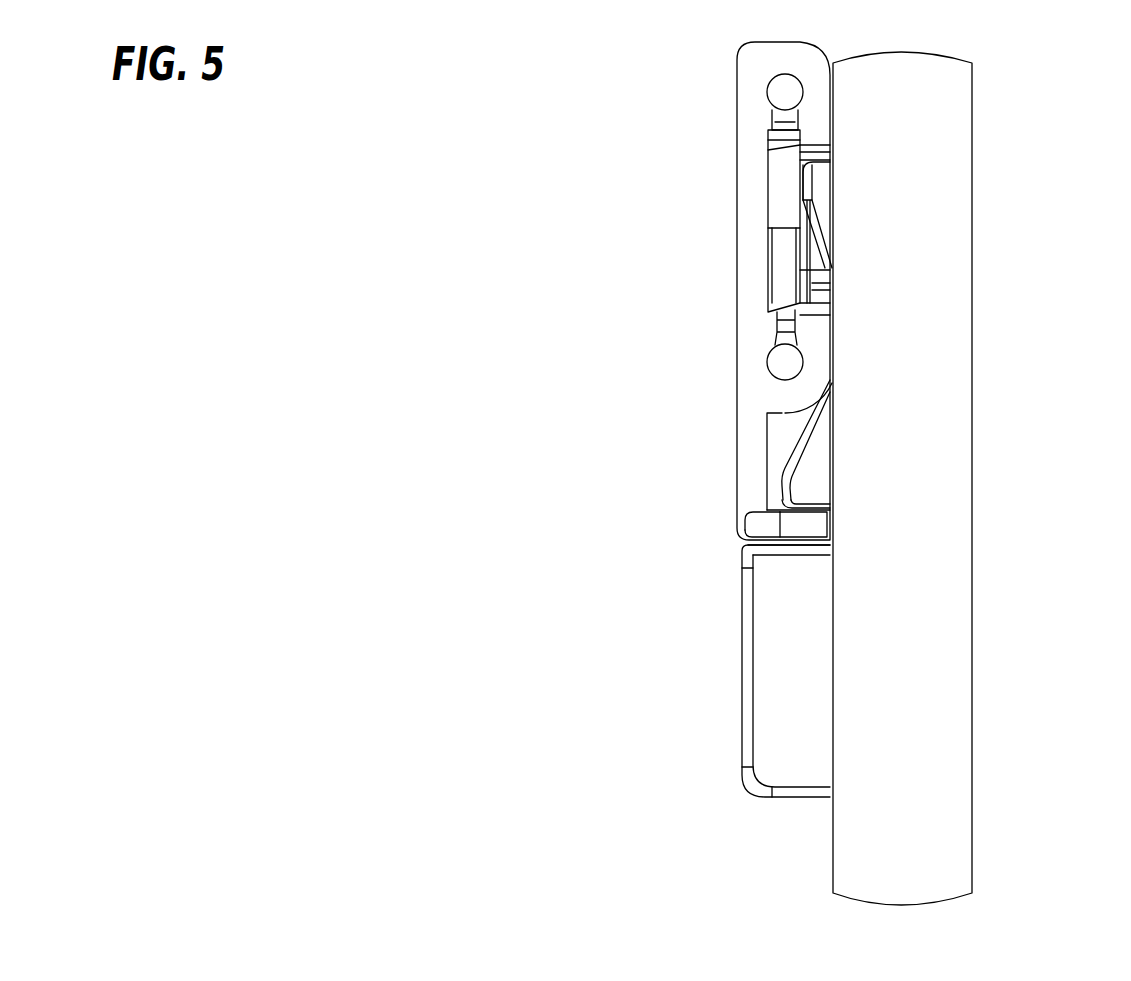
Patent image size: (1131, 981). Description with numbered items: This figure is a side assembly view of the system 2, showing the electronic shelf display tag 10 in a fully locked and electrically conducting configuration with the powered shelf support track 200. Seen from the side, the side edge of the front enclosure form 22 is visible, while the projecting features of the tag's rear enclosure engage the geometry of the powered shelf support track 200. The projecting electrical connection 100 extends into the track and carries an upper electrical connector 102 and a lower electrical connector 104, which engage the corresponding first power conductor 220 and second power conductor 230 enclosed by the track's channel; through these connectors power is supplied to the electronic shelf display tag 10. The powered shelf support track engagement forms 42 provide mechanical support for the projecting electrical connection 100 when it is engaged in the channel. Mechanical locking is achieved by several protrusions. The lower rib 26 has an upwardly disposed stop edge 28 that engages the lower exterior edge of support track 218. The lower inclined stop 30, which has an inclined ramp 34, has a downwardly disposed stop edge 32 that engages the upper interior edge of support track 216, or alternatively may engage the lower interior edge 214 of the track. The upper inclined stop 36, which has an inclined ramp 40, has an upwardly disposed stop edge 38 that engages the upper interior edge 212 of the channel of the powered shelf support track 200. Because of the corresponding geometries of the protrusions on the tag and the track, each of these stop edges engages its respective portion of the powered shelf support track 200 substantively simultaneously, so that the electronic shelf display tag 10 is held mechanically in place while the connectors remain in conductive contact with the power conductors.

The system 2 is at (400, 223).
The electronic shelf display tag 10 is at (1038, 110).
The front enclosure form 22 is at (902, 478).
The lower rib 26 is at (745, 660).
The upwardly disposed stop edge 28 is at (798, 545).
The lower inclined stop 30 is at (782, 460).
The downwardly disposed stop edge 32 is at (793, 515).
The inclined ramp 34 is at (800, 432).
The upper inclined stop 36 is at (808, 183).
The upwardly disposed stop edge 38 is at (822, 155).
The inclined ramp 40 is at (818, 245).
The powered shelf support track engagement forms 42 is at (780, 267).
The projecting electrical connection 100 is at (782, 215).
The upper electrical connector 102 is at (783, 120).
The lower electrical connector 104 is at (783, 333).
The powered shelf support track 200 is at (753, 80).
The upper interior edge 212 is at (810, 153).
The lower interior edge 214 is at (818, 300).
The upper interior edge of support track 216 is at (808, 515).
The lower exterior edge of support track 218 is at (800, 560).
The first power conductor 220 is at (780, 92).
The second power conductor 230 is at (783, 362).